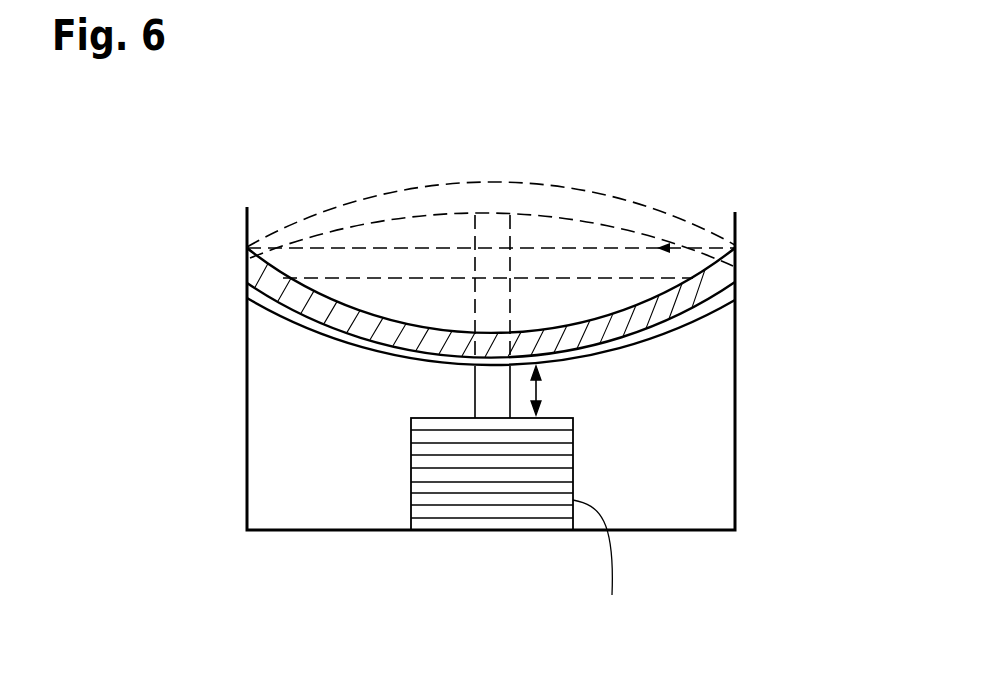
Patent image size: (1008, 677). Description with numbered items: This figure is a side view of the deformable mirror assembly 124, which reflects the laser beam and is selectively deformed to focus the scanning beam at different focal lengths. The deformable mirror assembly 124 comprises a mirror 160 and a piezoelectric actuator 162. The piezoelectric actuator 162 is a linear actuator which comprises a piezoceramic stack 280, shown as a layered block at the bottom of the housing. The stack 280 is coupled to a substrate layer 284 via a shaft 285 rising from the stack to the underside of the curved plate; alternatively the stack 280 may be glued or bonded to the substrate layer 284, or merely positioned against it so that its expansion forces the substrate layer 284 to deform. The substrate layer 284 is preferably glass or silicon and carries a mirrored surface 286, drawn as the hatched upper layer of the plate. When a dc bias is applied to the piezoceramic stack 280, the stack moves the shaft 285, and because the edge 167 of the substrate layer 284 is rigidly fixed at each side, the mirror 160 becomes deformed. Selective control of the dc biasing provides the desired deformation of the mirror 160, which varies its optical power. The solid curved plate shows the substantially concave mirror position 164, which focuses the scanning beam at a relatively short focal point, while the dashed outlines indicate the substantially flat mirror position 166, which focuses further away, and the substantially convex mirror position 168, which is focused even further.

The deformable mirror assembly 124 is at (228, 218).
The mirror 160 is at (488, 254).
The piezoelectric actuator 162 is at (613, 525).
The substantially concave mirror position 164 is at (278, 316).
The substantially flat mirror position 166 is at (658, 268).
The edge 167 is at (243, 262).
The substantially convex mirror position 168 is at (607, 215).
The piezoceramic stack 280 is at (430, 453).
The substrate layer 284 is at (347, 353).
The shaft 285 is at (475, 392).
The mirrored surface 286 is at (275, 272).